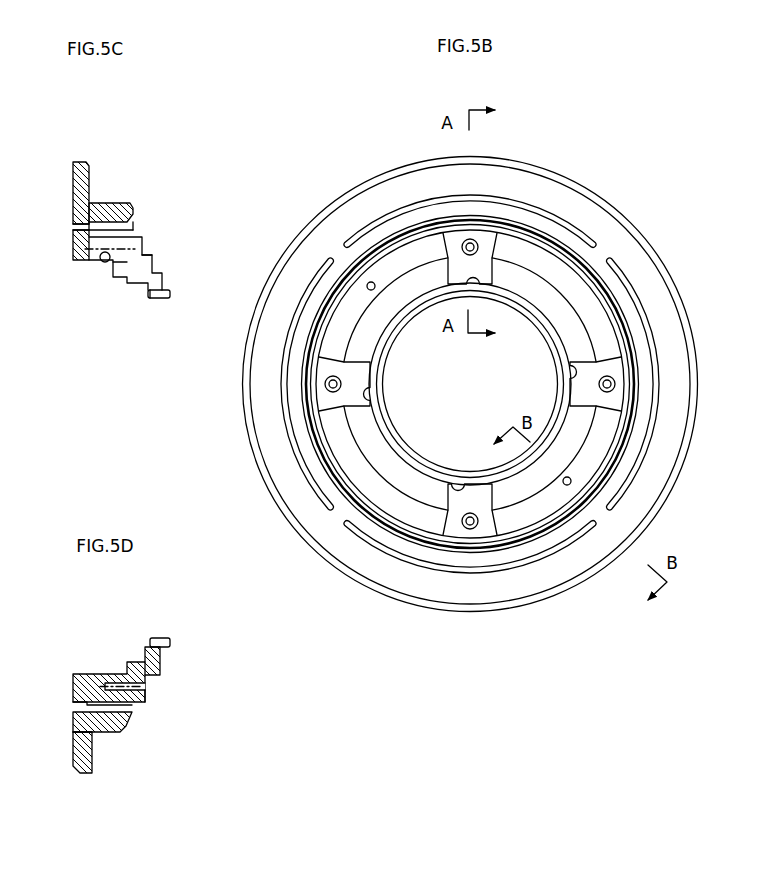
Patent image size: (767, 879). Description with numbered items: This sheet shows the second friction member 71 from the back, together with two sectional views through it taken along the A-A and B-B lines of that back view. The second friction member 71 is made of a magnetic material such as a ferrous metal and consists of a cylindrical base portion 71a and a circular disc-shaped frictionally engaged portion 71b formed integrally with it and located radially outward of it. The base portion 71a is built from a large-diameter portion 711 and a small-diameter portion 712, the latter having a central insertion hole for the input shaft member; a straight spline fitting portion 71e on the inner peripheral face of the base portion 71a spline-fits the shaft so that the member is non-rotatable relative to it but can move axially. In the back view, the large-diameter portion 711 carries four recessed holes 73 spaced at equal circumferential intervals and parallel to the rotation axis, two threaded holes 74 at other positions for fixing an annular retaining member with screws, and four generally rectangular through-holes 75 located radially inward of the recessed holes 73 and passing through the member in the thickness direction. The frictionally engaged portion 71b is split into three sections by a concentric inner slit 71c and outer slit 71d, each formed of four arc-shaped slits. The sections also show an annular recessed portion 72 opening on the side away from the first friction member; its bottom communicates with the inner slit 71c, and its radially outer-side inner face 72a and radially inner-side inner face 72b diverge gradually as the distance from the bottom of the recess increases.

In FIG. 5B, the second friction member 71 is at (592, 170).
In FIG. 5B, the base portion 71a is at (312, 596).
In FIG. 5C, the base portion 71a is at (72, 268).
In FIG. 5D, the base portion 71a is at (244, 645).
In FIG. 5B, the frictionally engaged portion 71b is at (694, 438).
In FIG. 5C, the frictionally engaged portion 71b is at (70, 158).
In FIG. 5D, the frictionally engaged portion 71b is at (74, 778).
In FIG. 5B, the inner slit 71c is at (384, 497).
In FIG. 5C, the inner slit 71c is at (80, 233).
In FIG. 5D, the inner slit 71c is at (74, 706).
In FIG. 5B, the outer slit 71d is at (352, 487).
In FIG. 5C, the outer slit 71d is at (82, 204).
In FIG. 5D, the outer slit 71d is at (76, 733).
In FIG. 5C, the straight spline fitting portion 71e is at (162, 298).
In FIG. 5D, the straight spline fitting portion 71e is at (162, 637).
In FIG. 5B, the annular recessed portion 72 is at (590, 264).
In FIG. 5C, the annular recessed portion 72 is at (136, 218).
In FIG. 5D, the annular recessed portion 72 is at (136, 709).
In FIG. 5C, the radially outer-side inner face 72a is at (127, 212).
In FIG. 5C, the radially inner-side inner face 72b is at (142, 228).
In FIG. 5B, the recessed holes 73 is at (474, 240).
In FIG. 5C, the recessed holes 73 is at (106, 264).
In FIG. 5B, the threaded holes 74 is at (369, 282).
In FIG. 5D, the threaded holes 74 is at (110, 684).
In FIG. 5B, the through-holes 75 is at (476, 290).
In FIG. 5C, the through-holes 75 is at (150, 260).
In FIG. 5B, the large-diameter portion 711 is at (420, 478).
In FIG. 5C, the large-diameter portion 711 is at (120, 270).
In FIG. 5D, the large-diameter portion 711 is at (147, 690).
In FIG. 5B, the small-diameter portion 712 is at (436, 468).
In FIG. 5C, the small-diameter portion 712 is at (172, 292).
In FIG. 5D, the small-diameter portion 712 is at (160, 662).